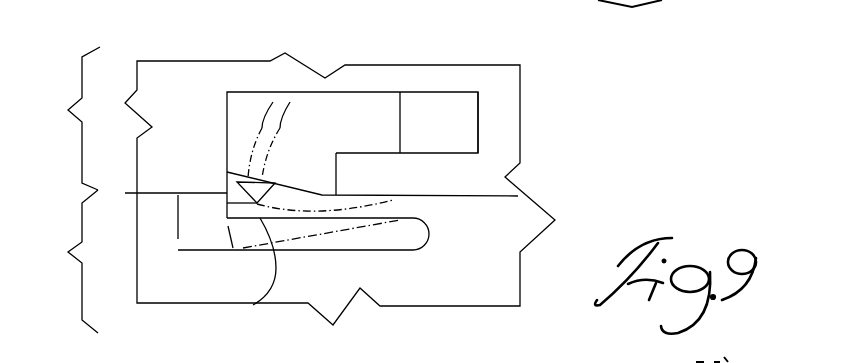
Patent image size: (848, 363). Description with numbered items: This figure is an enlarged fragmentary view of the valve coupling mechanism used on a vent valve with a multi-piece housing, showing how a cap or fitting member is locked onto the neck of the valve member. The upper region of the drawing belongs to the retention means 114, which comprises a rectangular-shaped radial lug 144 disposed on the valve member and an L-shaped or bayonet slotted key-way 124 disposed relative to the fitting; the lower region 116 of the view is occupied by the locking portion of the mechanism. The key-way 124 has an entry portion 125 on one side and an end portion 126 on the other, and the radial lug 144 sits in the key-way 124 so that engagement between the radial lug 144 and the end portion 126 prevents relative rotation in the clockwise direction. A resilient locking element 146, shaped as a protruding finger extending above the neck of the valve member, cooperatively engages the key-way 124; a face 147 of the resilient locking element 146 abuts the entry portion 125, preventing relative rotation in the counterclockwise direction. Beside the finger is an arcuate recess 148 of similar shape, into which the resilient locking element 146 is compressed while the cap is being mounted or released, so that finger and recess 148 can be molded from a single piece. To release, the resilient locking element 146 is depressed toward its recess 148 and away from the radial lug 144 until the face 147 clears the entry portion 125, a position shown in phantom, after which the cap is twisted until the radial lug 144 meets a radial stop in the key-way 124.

The retention means 114 is at (63, 118).
The second body portion 116 is at (62, 261).
The key-way 124 is at (355, 122).
The entry portion 125 is at (227, 157).
The end portion 126 is at (478, 133).
The radial lug 144 is at (468, 123).
The resilient locking element 146 is at (253, 305).
The face 147 is at (228, 227).
The recess 148 is at (405, 237).